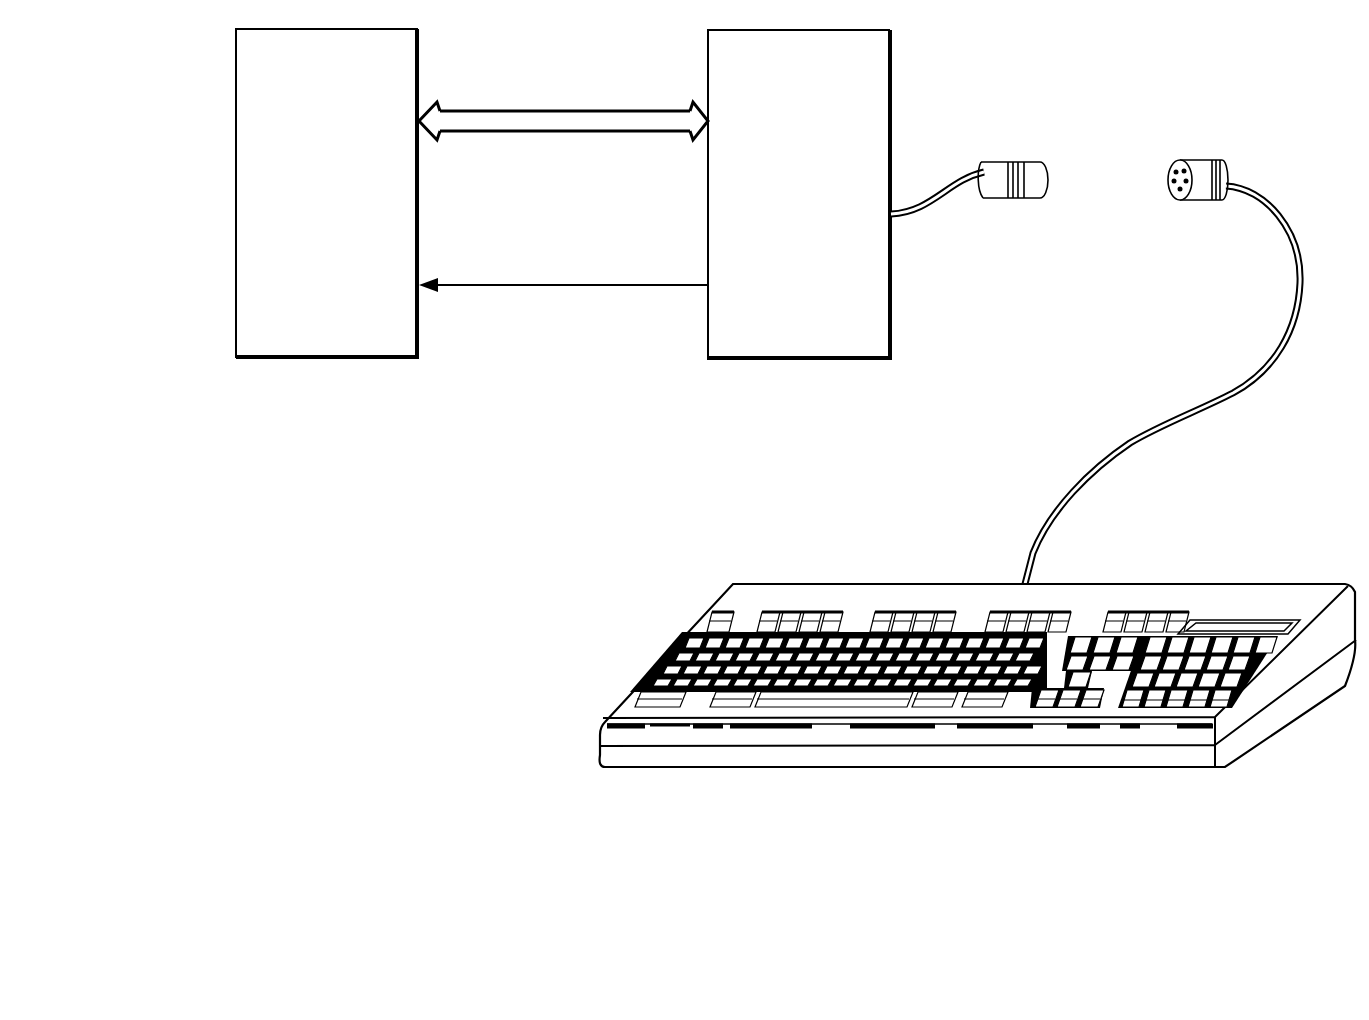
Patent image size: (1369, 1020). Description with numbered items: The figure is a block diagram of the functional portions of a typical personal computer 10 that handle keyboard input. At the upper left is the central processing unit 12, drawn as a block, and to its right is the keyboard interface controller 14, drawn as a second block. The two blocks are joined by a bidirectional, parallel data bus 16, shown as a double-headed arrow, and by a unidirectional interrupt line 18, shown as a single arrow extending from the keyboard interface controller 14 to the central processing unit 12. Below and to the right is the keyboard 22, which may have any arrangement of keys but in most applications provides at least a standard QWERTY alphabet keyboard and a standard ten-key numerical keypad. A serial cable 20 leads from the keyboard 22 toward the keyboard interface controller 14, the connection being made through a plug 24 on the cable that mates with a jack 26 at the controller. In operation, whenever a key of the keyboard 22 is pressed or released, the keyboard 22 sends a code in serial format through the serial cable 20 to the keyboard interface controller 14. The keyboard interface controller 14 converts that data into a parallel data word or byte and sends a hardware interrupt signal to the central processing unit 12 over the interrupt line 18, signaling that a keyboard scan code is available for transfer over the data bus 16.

The personal computer 10 is at (314, 559).
The central processing unit 12 is at (256, 314).
The keyboard interface controller 14 is at (873, 312).
The bidirectional parallel data bus 16 is at (557, 122).
The interrupt line 18 is at (605, 288).
The serial cable 20 is at (1277, 358).
The keyboard 22 is at (906, 595).
The plug 24 is at (1168, 168).
The jack 26 is at (1030, 190).